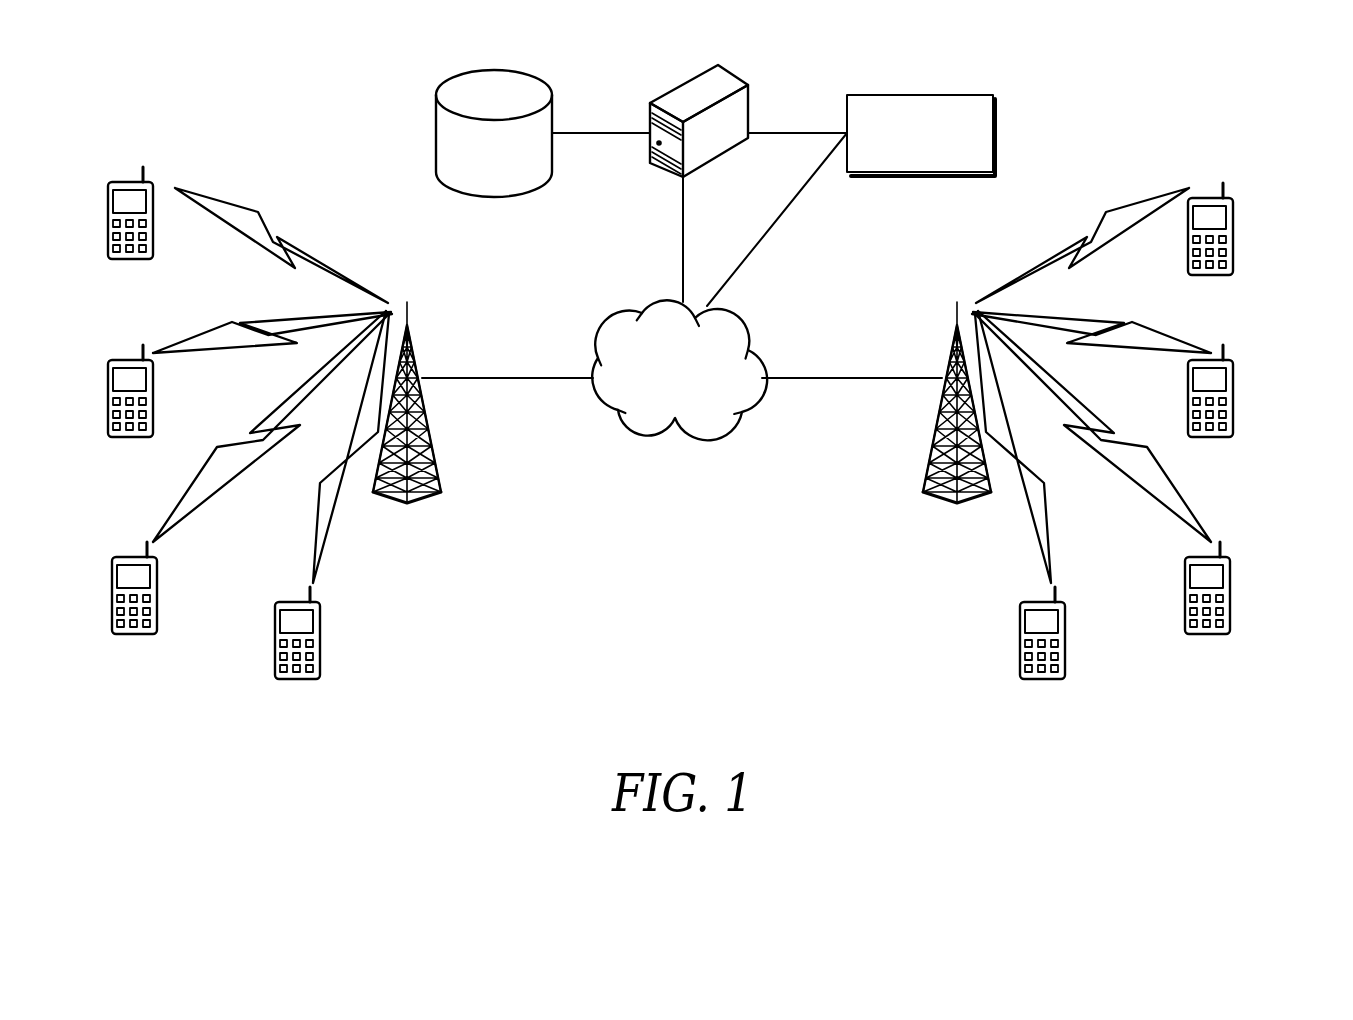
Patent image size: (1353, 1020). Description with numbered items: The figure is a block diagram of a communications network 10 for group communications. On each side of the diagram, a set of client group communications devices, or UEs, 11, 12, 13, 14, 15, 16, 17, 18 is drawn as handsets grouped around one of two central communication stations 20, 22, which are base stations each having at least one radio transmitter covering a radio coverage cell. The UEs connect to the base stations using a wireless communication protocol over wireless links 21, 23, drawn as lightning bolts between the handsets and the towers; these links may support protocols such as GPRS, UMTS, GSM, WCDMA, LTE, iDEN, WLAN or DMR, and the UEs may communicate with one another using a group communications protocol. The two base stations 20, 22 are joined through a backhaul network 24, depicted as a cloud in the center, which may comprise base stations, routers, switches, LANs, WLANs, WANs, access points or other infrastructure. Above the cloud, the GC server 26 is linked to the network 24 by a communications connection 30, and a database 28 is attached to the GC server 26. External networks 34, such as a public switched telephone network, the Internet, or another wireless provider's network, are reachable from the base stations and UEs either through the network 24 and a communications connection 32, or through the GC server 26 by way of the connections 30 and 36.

The communications network 10 is at (1318, 757).
The client group communications device 11 is at (130, 180).
The client group communications device 12 is at (130, 358).
The client group communications device 13 is at (133, 556).
The client group communications device 14 is at (295, 601).
The client group communications device 15 is at (1066, 641).
The client group communications device 16 is at (1232, 596).
The client group communications device 17 is at (1234, 398).
The client group communications device 18 is at (1234, 238).
The central communication station 20 is at (412, 347).
The wireless link 21 is at (351, 538).
The central communication station 22 is at (952, 347).
The wireless link 23 is at (1013, 538).
The backhaul network 24 is at (655, 440).
The GC server 26 is at (739, 76).
The database 28 is at (452, 77).
The communications connection 30 is at (682, 243).
The communications connection 32 is at (780, 221).
The external networks 34 is at (977, 95).
The communications connection 36 is at (797, 130).